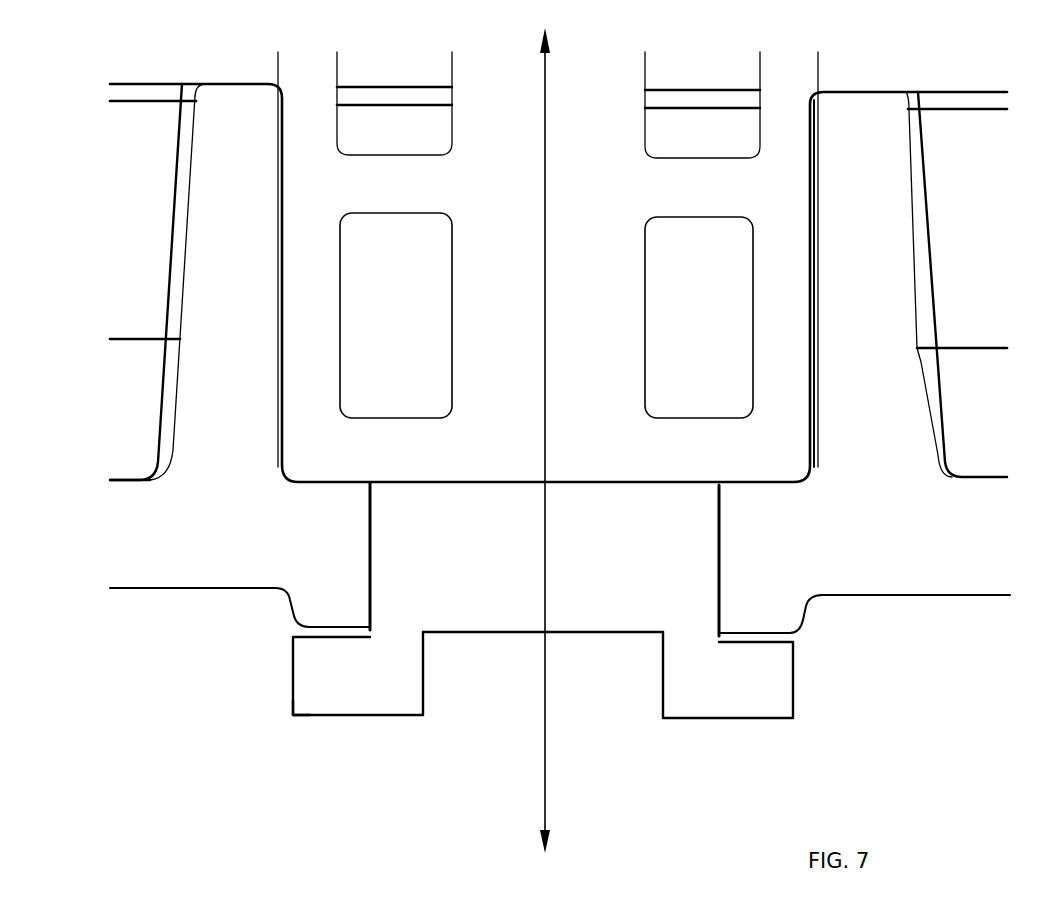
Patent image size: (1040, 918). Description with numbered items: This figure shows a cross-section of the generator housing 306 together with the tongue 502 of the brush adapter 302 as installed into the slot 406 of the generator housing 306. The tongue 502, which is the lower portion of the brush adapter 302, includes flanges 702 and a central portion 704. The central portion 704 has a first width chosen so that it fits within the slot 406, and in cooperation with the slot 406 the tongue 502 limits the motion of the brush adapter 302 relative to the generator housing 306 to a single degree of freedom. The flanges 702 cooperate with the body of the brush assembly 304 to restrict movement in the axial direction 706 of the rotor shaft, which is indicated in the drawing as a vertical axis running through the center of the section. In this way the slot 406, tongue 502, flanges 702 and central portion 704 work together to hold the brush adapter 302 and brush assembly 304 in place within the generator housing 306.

The brush adapter 302 is at (309, 796).
The brush assembly 304 is at (287, 37).
The generator housing 306 is at (112, 524).
The slot 406 is at (361, 543).
The tongue 502 is at (279, 729).
The flanges 702 is at (312, 683).
The central portion 704 is at (403, 519).
The axial direction 706 is at (545, 68).